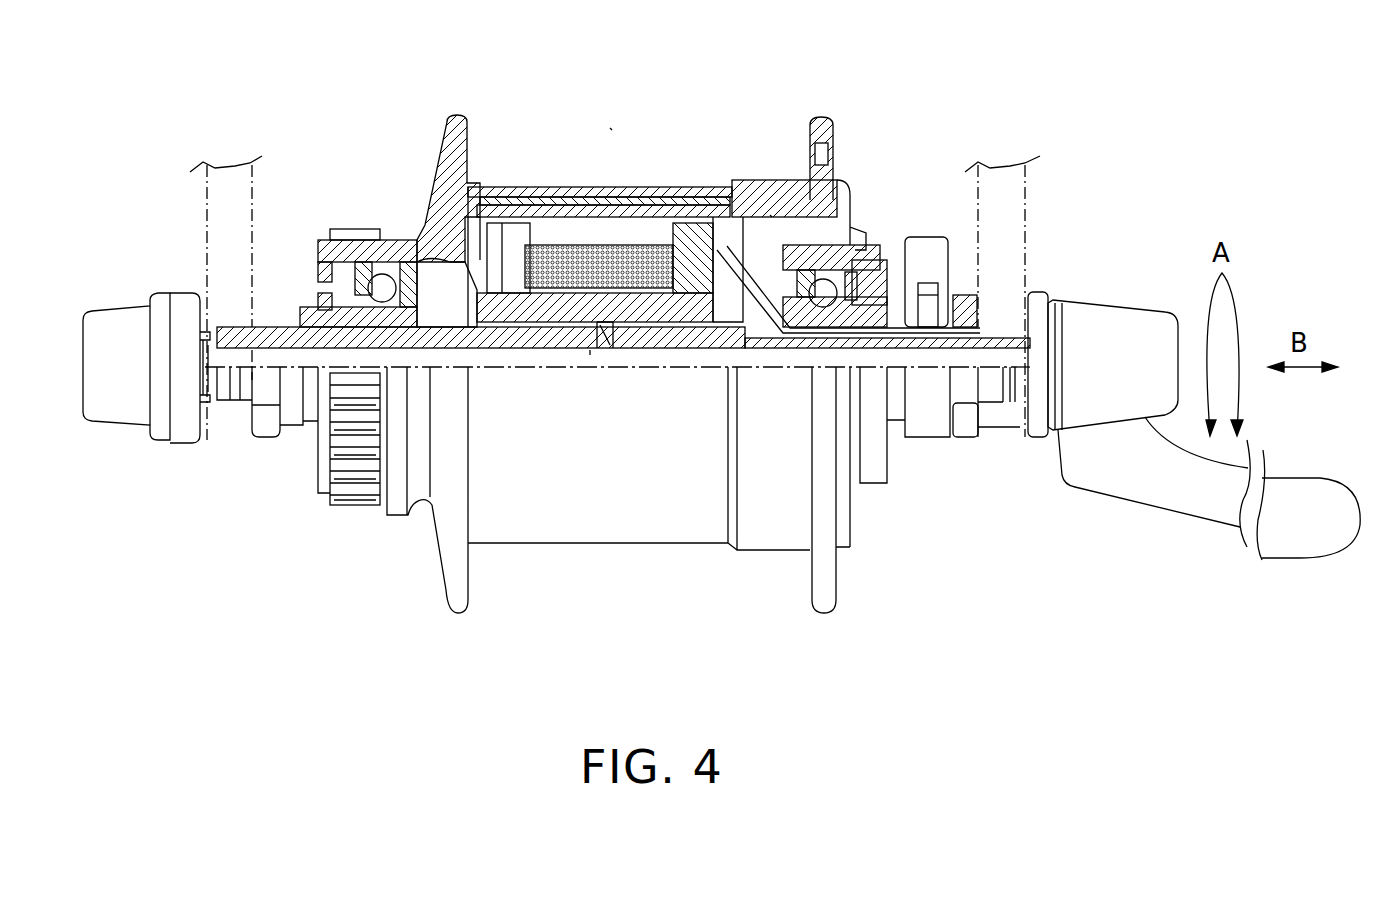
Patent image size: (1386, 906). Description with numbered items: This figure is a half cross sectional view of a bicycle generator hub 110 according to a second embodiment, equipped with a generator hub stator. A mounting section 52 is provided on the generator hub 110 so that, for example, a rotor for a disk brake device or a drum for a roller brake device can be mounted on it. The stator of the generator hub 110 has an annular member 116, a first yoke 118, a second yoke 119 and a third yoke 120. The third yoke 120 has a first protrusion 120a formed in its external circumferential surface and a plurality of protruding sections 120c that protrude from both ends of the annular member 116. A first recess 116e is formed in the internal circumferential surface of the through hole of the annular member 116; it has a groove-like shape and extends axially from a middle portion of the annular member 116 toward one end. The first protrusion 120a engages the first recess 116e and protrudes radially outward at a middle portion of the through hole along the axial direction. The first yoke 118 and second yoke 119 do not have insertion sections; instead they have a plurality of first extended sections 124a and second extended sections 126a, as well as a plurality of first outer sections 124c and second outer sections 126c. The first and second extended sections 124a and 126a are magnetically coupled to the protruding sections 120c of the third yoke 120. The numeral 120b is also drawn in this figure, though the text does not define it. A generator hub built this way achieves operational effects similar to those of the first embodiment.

The bicycle generator hub 110 is at (610, 128).
The annular member 116 is at (520, 215).
The first recess 116e is at (605, 350).
The first yoke 118 is at (600, 236).
The second yoke 119 is at (725, 240).
The third yoke 120 is at (620, 350).
The first protrusion 120a is at (640, 280).
The bearing inner race 120b is at (592, 350).
The protruding sections 120c is at (385, 280).
The first extended sections 124a is at (605, 235).
The first outer sections 124c is at (470, 262).
The second extended sections 126a is at (548, 190).
The second outer sections 126c is at (712, 280).
The mounting section 52 is at (347, 232).